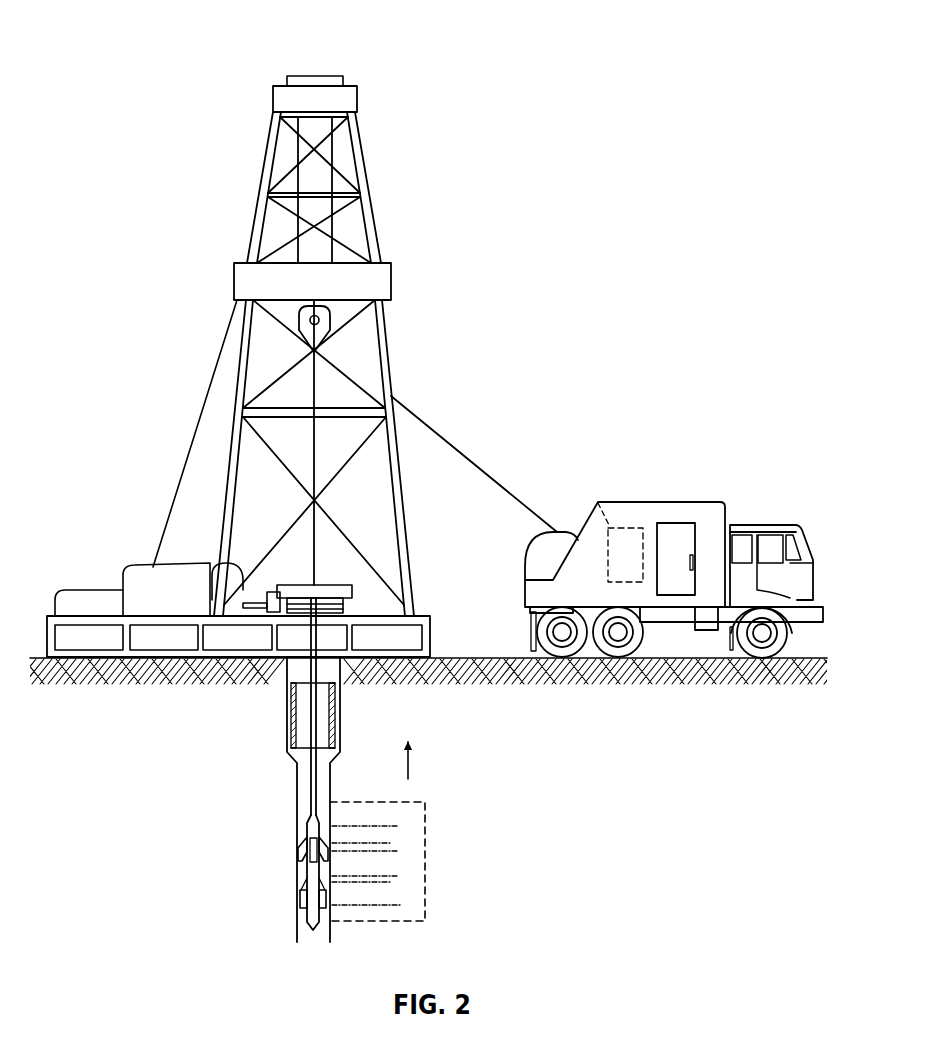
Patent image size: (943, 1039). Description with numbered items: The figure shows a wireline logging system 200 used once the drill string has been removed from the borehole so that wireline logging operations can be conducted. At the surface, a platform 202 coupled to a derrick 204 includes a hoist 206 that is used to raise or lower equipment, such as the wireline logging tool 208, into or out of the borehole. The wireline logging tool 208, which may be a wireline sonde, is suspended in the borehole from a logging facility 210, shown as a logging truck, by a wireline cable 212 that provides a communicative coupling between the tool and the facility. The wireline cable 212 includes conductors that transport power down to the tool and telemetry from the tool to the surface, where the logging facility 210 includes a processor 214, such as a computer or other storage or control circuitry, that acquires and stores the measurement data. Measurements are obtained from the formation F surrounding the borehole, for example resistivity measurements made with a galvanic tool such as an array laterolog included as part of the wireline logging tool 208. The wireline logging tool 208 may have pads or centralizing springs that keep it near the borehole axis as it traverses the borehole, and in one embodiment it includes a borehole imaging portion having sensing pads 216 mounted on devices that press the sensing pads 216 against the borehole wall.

The wireline logging system 200 is at (207, 44).
The platform 202 is at (431, 623).
The derrick 204 is at (416, 557).
The hoist 206 is at (333, 323).
The wireline logging tool 208 is at (307, 833).
The logging facility 210 is at (705, 507).
The wireline cable 212 is at (466, 455).
The processor 214 is at (598, 502).
The sensing pads 216 is at (302, 897).
The formation F is at (430, 802).